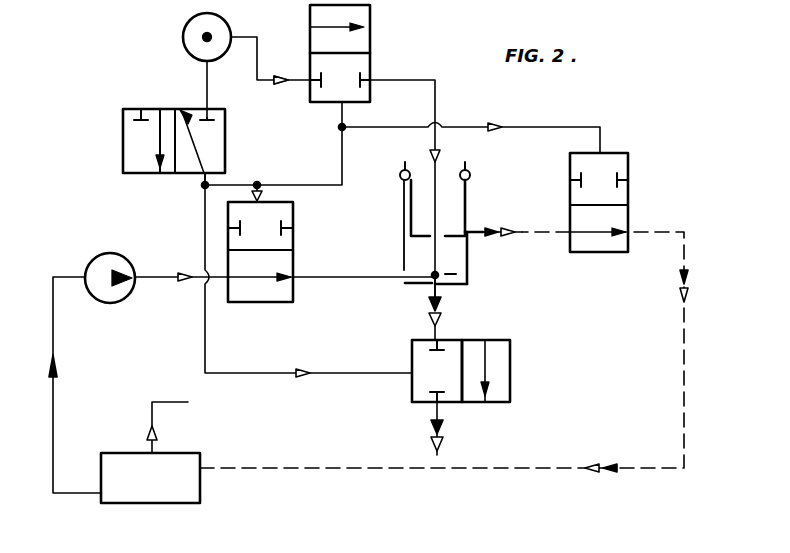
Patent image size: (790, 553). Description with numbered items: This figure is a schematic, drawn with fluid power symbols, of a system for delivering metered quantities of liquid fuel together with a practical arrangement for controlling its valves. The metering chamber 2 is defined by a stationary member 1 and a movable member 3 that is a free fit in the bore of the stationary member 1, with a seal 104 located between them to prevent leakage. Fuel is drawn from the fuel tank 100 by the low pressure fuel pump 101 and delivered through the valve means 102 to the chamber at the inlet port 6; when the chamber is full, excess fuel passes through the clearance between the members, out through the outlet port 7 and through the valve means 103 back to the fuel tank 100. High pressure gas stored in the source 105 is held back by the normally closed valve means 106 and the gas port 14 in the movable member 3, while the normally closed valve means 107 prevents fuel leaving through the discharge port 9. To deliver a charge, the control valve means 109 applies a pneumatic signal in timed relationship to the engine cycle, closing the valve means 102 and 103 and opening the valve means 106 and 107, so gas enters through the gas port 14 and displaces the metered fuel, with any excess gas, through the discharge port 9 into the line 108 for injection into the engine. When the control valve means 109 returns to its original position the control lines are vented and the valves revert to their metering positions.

The stationary member 1 is at (478, 285).
The metering chamber 2 is at (468, 262).
The movable member 3 is at (452, 213).
The inlet port 6 is at (400, 281).
The outlet port 7 is at (452, 258).
The discharge port 9 is at (428, 289).
The gas port 14 is at (430, 232).
The fuel tank 100 is at (200, 453).
The low pressure fuel pump 101 is at (115, 253).
The valve means 102 is at (295, 240).
The valve means 103 is at (630, 171).
The seal 104 is at (472, 176).
The source of high pressure gas 105 is at (183, 37).
The valve means 106 is at (372, 41).
The valve means 107 is at (470, 405).
The line 108 is at (437, 411).
The control valve means 109 is at (141, 108).